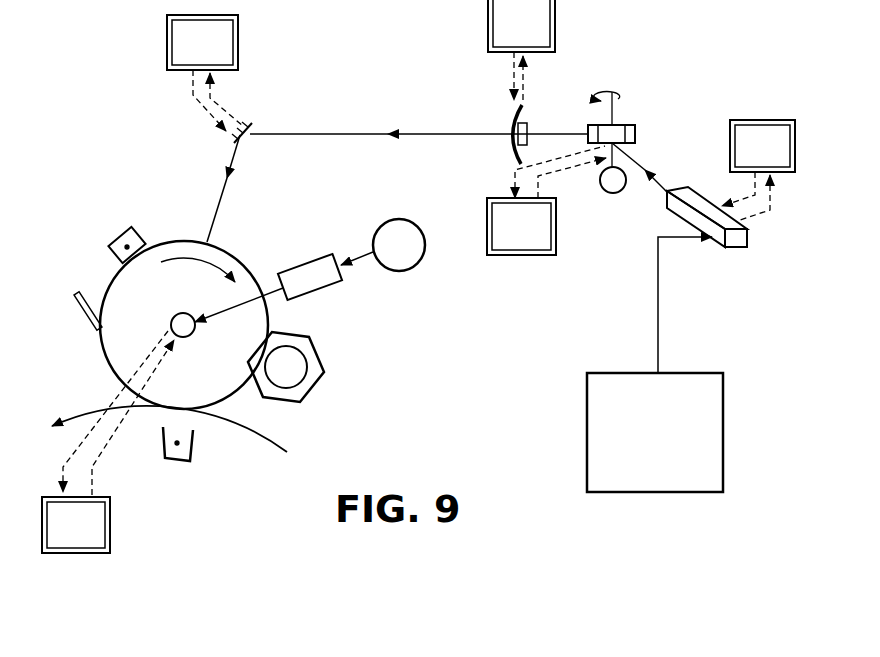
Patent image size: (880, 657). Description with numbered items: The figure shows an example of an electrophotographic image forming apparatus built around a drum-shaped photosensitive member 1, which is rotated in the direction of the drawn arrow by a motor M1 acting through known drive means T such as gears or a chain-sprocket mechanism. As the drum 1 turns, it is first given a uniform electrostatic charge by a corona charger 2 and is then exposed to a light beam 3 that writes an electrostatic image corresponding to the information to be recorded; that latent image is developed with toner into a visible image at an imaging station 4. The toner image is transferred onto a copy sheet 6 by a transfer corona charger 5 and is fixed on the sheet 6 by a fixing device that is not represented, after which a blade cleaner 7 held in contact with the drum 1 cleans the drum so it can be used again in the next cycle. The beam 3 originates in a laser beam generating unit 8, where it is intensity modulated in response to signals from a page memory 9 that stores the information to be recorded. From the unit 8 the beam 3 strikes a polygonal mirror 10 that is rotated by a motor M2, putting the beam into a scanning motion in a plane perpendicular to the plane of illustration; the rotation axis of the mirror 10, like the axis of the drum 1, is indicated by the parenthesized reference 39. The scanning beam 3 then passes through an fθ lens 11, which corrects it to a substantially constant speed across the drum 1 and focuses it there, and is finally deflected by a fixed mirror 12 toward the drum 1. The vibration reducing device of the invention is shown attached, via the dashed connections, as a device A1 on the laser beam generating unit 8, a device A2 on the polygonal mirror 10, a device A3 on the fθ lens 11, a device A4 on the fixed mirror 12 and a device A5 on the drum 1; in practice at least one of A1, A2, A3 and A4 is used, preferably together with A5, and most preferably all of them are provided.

The drum-shaped electrophotographic photosensitive member 1 is at (101, 356).
The corona charger 2 is at (117, 232).
The light beam 3 is at (223, 200).
The imaging station 4 is at (302, 362).
The transfer corona charger 5 is at (177, 463).
The copy sheet 6 is at (250, 436).
The blade cleaner 7 is at (84, 318).
The laser beam generating unit 8 is at (692, 190).
The page memory 9 is at (723, 412).
The polygonal mirror 10 is at (633, 125).
The fθ lens 11 is at (508, 152).
The fixed mirror 12 is at (247, 127).
The rotation axis 39 is at (188, 337).
The drive means T is at (305, 258).
The motor M1 is at (414, 269).
The motor M2 is at (608, 194).
The vibration reducing device A1 is at (758, 170).
The vibration reducing device A2 is at (546, 200).
The vibration reducing device A3 is at (521, 50).
The vibration reducing device A4 is at (205, 73).
The vibration reducing device A5 is at (108, 442).